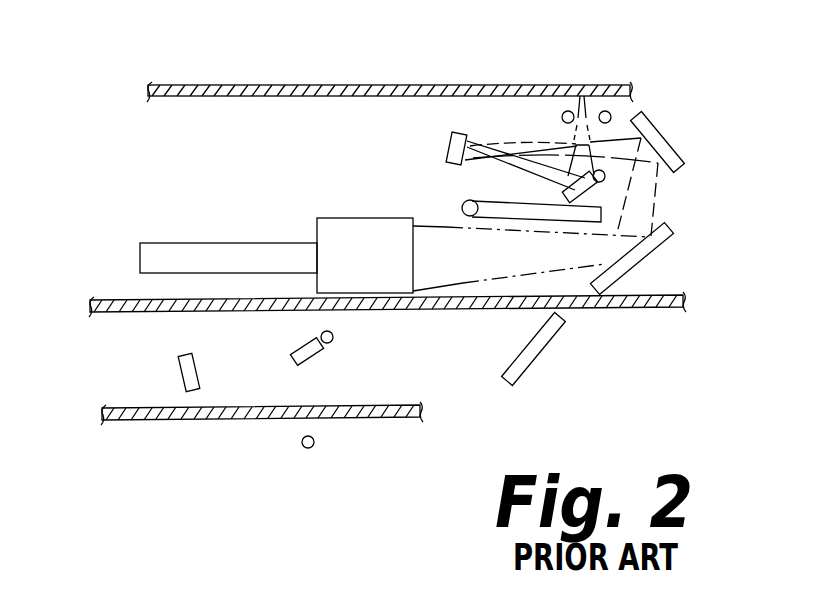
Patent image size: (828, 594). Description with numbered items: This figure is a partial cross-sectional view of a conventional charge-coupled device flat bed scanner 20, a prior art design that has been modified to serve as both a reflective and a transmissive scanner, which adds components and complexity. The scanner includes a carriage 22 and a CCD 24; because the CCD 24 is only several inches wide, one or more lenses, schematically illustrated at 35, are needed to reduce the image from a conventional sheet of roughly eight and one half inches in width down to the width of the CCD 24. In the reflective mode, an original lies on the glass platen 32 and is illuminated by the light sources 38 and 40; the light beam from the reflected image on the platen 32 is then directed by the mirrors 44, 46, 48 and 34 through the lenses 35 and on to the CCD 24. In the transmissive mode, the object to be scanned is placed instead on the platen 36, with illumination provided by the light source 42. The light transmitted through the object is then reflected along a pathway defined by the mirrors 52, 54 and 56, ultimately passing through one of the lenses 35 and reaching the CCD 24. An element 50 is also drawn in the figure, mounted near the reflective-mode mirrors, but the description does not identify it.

The conventional scanner 20 is at (690, 89).
The carriage 22 is at (662, 308).
The CCD 24 is at (157, 242).
The glass platen 32 is at (390, 85).
The mirror 34 is at (656, 255).
The lenses 35 is at (320, 218).
The platen 36 is at (233, 421).
The light source 38 is at (605, 111).
The light source 40 is at (568, 111).
The light source 42 is at (310, 449).
The mirror 44 is at (568, 196).
The mirror 46 is at (448, 143).
The mirror 48 is at (665, 138).
The mounting rod 50 is at (533, 220).
The mirror 52 is at (540, 350).
The mirror 54 is at (323, 350).
The mirror 56 is at (178, 370).